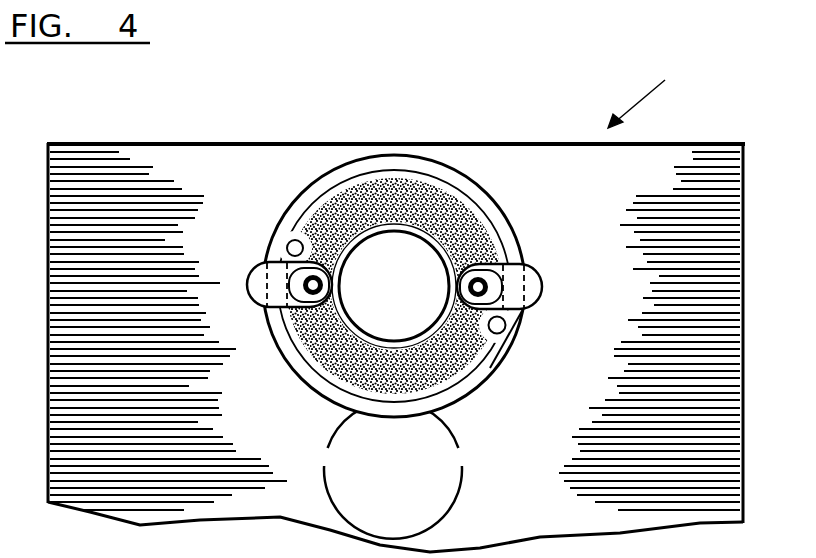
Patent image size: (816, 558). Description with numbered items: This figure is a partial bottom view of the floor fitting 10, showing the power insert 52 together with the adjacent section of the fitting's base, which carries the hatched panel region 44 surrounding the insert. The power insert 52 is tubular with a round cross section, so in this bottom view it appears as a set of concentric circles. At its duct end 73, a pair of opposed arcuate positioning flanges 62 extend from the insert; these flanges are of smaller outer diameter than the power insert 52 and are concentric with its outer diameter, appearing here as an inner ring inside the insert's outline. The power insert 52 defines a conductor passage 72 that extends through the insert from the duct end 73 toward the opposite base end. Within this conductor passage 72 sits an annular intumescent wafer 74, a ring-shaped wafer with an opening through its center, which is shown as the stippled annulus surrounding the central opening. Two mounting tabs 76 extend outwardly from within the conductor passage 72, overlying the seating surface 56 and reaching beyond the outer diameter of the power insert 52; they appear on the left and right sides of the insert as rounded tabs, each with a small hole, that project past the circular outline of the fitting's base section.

The floor fitting 10 is at (652, 97).
The panel 44 is at (150, 178).
The power insert 52 is at (413, 264).
The seating surface 56 is at (490, 213).
The arcuate positioning flanges 62 is at (372, 170).
The conductor passage 72 is at (414, 243).
The duct end 73 is at (413, 253).
The annular intumescent wafer 74 is at (358, 208).
The mounting tabs 76 is at (262, 270).